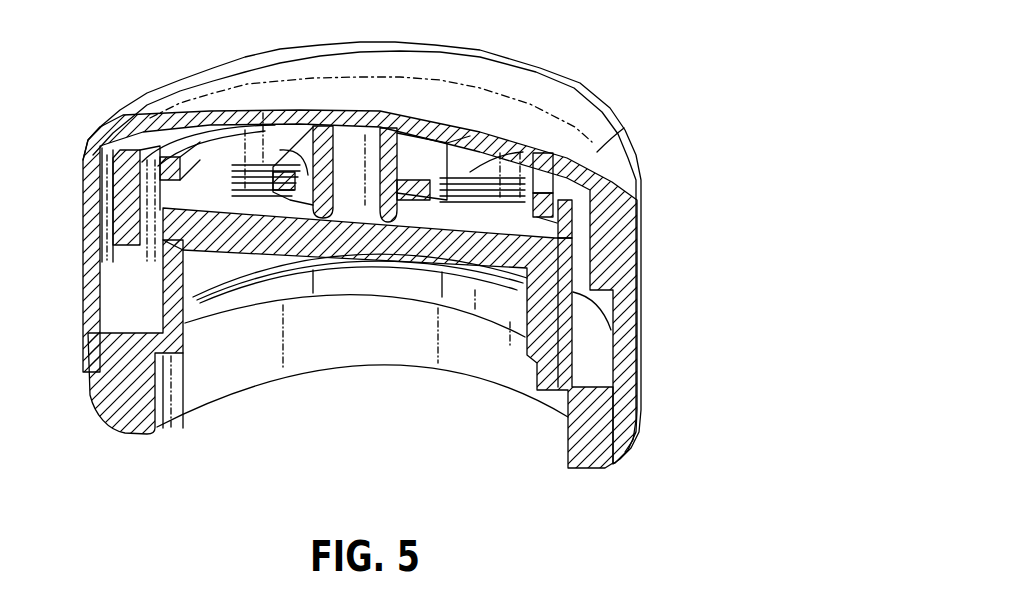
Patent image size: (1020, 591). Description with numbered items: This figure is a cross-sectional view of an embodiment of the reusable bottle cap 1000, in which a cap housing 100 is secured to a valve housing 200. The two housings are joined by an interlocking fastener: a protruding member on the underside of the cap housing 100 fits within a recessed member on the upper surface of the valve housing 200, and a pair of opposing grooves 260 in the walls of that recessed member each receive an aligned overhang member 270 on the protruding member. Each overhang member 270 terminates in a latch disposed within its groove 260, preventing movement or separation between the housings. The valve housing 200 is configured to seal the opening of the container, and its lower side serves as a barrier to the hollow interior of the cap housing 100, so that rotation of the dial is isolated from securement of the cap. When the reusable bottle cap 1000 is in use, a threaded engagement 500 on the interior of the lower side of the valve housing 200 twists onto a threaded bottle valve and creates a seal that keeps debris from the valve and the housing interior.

The reusable bottle cap 1000 is at (640, 86).
The cap housing 100 is at (641, 229).
The valve housing 200 is at (613, 447).
The groove 260 is at (490, 205).
The overhang member 270 is at (309, 200).
The threaded engagement 500 is at (223, 275).